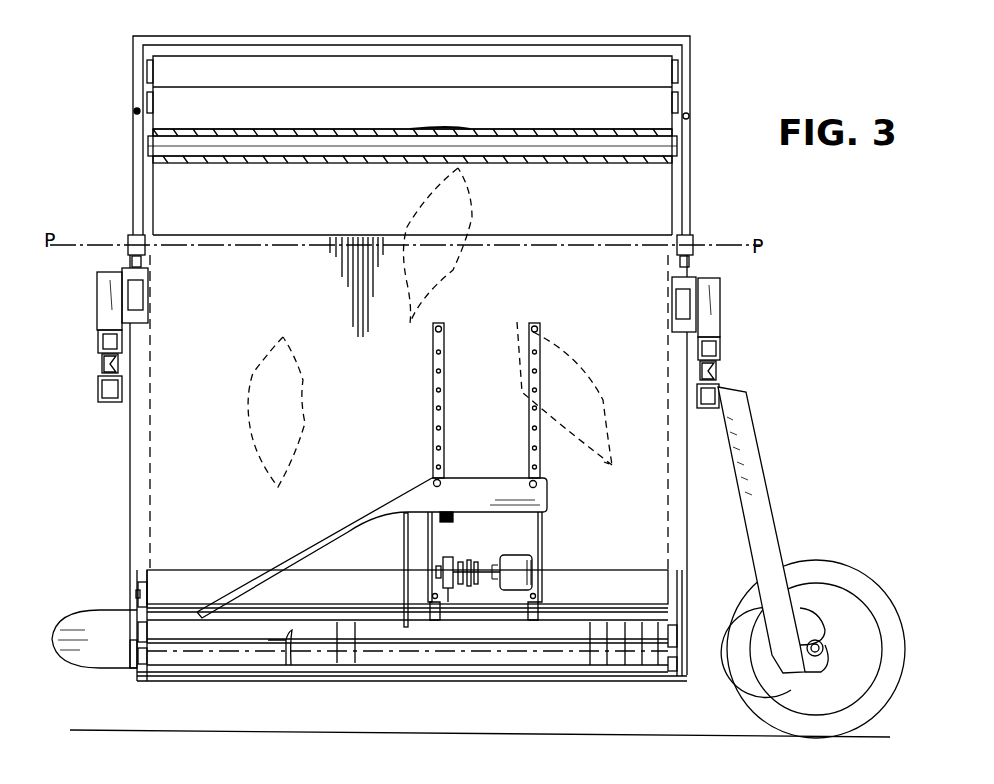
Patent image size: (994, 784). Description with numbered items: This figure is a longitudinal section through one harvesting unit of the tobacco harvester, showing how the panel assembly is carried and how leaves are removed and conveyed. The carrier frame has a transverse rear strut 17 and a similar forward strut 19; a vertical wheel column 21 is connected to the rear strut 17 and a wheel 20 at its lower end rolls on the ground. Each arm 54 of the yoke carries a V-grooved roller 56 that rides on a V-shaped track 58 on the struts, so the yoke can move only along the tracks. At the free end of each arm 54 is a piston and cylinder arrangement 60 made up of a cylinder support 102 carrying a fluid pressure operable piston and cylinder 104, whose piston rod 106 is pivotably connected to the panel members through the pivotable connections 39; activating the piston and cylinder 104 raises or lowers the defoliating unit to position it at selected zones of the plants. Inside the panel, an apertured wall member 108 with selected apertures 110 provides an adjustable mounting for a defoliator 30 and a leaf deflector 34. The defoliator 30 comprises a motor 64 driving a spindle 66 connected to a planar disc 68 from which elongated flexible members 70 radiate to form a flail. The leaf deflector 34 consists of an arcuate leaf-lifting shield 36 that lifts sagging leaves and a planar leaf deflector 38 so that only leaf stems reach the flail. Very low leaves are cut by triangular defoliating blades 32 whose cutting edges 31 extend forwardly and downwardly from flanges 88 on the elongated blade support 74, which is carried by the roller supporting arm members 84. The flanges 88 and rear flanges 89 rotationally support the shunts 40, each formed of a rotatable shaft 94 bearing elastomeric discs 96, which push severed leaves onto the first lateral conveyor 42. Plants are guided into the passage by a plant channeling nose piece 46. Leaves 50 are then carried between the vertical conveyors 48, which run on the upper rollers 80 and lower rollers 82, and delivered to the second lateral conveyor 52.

The transverse rear strut 17 is at (712, 408).
The forward strut 19 is at (112, 402).
The wheel 20 is at (830, 565).
The vertical wheel column 21 is at (770, 509).
The defoliator 30 is at (543, 558).
The cutting edge 31 is at (286, 650).
The defoliating blade 32 is at (282, 662).
The leaf deflector 34 is at (430, 480).
The leaf-lifting shield 36 is at (504, 480).
The planar leaf deflector 38 is at (404, 560).
The pivotable connection 39 is at (135, 236).
The shunt 40 is at (616, 612).
The first lateral conveyor 42 is at (158, 678).
The plant channeling nose piece 46 is at (55, 660).
The vertical conveyor 48 is at (373, 84).
The leaves 50 is at (298, 352).
The second lateral conveyor 52 is at (224, 130).
The arm of the yoke 54 is at (98, 342).
The roller 56 is at (100, 365).
The track 58 is at (102, 388).
The piston and cylinder arrangement 60 is at (95, 275).
The motor 64 is at (531, 566).
The spindle 66 is at (470, 564).
The planar disc 68 is at (452, 557).
The elongated flexible member 70 is at (448, 512).
The elongated blade support 74 is at (200, 678).
The elongated roller 80 is at (147, 105).
The elongated roller 82 is at (138, 589).
The roller supporting arm member 84 is at (134, 665).
The flange 88 is at (286, 670).
The flange 89 is at (680, 633).
The rotatable shaft 94 is at (420, 643).
The elastomeric disc 96 is at (338, 664).
The cylinder support 102 is at (101, 306).
The fluid pressure operable piston and cylinder 104 is at (138, 298).
The piston rod 106 is at (142, 262).
The apertured wall member 108 is at (500, 306).
The aperture 110 is at (433, 390).